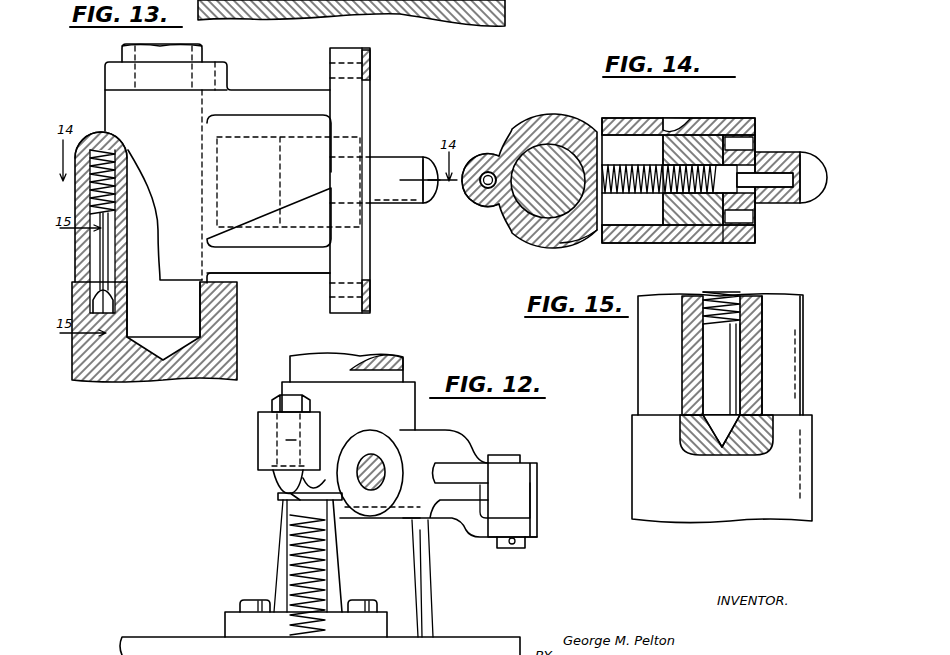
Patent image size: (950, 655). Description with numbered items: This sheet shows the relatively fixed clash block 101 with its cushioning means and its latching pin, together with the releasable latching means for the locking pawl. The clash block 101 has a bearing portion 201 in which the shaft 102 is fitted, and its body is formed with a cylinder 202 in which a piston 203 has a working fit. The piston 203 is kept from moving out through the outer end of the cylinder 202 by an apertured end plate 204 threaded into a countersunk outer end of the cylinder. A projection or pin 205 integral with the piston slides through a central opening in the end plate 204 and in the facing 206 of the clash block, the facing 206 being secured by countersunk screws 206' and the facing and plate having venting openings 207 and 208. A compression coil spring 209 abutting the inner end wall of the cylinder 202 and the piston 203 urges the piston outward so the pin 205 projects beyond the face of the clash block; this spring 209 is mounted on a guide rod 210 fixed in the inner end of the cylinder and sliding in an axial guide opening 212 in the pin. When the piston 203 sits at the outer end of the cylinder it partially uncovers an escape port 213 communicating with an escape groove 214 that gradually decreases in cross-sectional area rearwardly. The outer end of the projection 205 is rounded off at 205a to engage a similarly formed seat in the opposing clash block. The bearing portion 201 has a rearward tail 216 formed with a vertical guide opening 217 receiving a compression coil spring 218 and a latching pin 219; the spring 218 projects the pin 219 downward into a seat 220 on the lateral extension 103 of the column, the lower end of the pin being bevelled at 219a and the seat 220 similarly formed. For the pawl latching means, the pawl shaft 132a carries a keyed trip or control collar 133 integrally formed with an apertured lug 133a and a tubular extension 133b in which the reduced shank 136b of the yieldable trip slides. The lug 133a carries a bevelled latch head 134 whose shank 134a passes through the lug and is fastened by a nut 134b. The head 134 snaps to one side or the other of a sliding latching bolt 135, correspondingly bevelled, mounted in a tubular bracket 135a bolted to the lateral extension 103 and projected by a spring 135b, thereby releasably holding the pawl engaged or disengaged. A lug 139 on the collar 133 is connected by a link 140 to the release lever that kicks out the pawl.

In FIG. 13, the clash block 101 is at (267, 103).
In FIG. 14, the clash block 101 is at (744, 112).
In FIG. 15, the clash block 101 is at (648, 349).
In FIG. 13, the shaft 102 is at (163, 309).
In FIG. 14, the shaft 102 is at (533, 214).
In FIG. 13, the lateral extension of the column 103 is at (237, 349).
In FIG. 15, the lateral extension of the column 103 is at (641, 463).
In FIG. 12, the lateral extension of the column 103 is at (172, 623).
In FIG. 12, the shaft of the pawl 132a is at (406, 357).
In FIG. 12, the trip or control collar 133 is at (393, 418).
In FIG. 12, the apertured lug 133a is at (262, 433).
In FIG. 12, the tubular extension 133b is at (457, 448).
In FIG. 12, the bevelled latch head 134 is at (274, 474).
In FIG. 12, the shank of the latch head 134a is at (288, 443).
In FIG. 12, the nut 134b is at (305, 405).
In FIG. 12, the sliding latching bolt 135 is at (282, 497).
In FIG. 12, the tubular bracket 135a is at (332, 566).
In FIG. 12, the spring 135b is at (290, 546).
In FIG. 12, the shank of the trip 136b is at (382, 466).
In FIG. 12, the lug 139 is at (536, 527).
In FIG. 12, the link 140 is at (538, 500).
In FIG. 13, the bearing portion 201 is at (143, 100).
In FIG. 14, the bearing portion 201 is at (560, 118).
In FIG. 13, the cylinder 202 is at (263, 228).
In FIG. 14, the cylinder 202 is at (650, 224).
In FIG. 13, the piston 203 is at (287, 201).
In FIG. 14, the piston 203 is at (688, 219).
In FIG. 14, the apertured end plate 204 is at (742, 233).
In FIG. 13, the projection or pin 205 is at (392, 166).
In FIG. 14, the projection or pin 205 is at (800, 144).
In FIG. 13, the rounded outer end of the projection 205a is at (432, 204).
In FIG. 14, the rounded outer end of the projection 205a is at (828, 173).
In FIG. 13, the facing 206 is at (373, 180).
In FIG. 14, the facing 206 is at (770, 155).
In FIG. 13, the countersunk screws 206' is at (372, 183).
In FIG. 14, the venting opening 207 is at (758, 141).
In FIG. 14, the venting opening 208 is at (756, 217).
In FIG. 14, the compression coil spring 209 is at (597, 232).
In FIG. 14, the guide rod 210 is at (608, 222).
In FIG. 14, the axial guide opening 212 is at (765, 179).
In FIG. 14, the escape port 213 is at (668, 123).
In FIG. 14, the escape groove 214 is at (652, 108).
In FIG. 13, the rearward extension or tail 216 is at (130, 257).
In FIG. 14, the rearward extension or tail 216 is at (468, 210).
In FIG. 13, the vertical guide opening 217 is at (123, 190).
In FIG. 14, the vertical guide opening 217 is at (485, 166).
In FIG. 15, the vertical guide opening 217 is at (745, 311).
In FIG. 13, the compression coil spring 218 is at (121, 166).
In FIG. 14, the compression coil spring 218 is at (478, 213).
In FIG. 15, the compression coil spring 218 is at (737, 294).
In FIG. 13, the latching pin 219 is at (112, 272).
In FIG. 15, the latching pin 219 is at (727, 379).
In FIG. 13, the bevelled lower end 219a is at (115, 288).
In FIG. 15, the bevelled lower end 219a is at (707, 417).
In FIG. 13, the seat 220 is at (122, 316).
In FIG. 15, the seat 220 is at (713, 437).